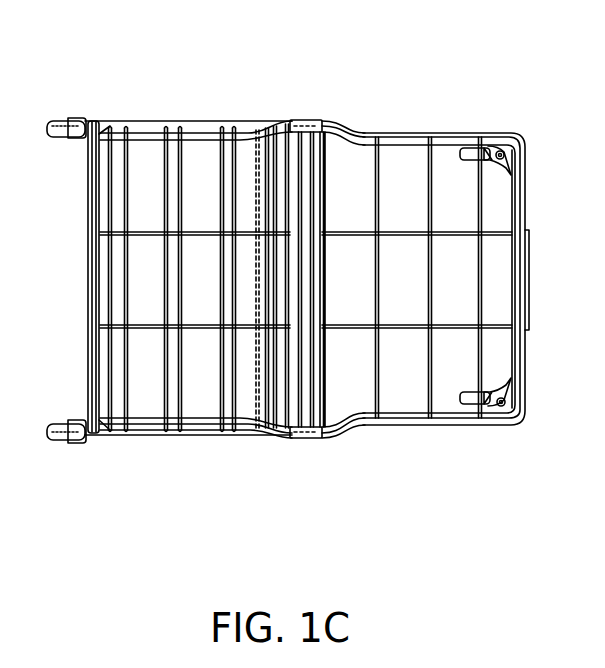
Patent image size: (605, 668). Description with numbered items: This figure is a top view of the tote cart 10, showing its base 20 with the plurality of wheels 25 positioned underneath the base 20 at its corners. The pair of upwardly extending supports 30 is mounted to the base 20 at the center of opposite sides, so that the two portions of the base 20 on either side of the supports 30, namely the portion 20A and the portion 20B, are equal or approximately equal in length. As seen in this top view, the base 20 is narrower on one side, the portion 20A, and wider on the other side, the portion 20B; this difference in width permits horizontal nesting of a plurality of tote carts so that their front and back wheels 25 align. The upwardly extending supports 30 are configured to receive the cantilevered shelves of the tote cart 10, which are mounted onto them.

The tote cart 10 is at (303, 296).
The base 20 is at (307, 313).
The narrower side portion of base 20A is at (303, 468).
The wider side portion of base 20B is at (87, 468).
The wheels 25 is at (468, 150).
The upwardly extending supports 30 is at (302, 121).